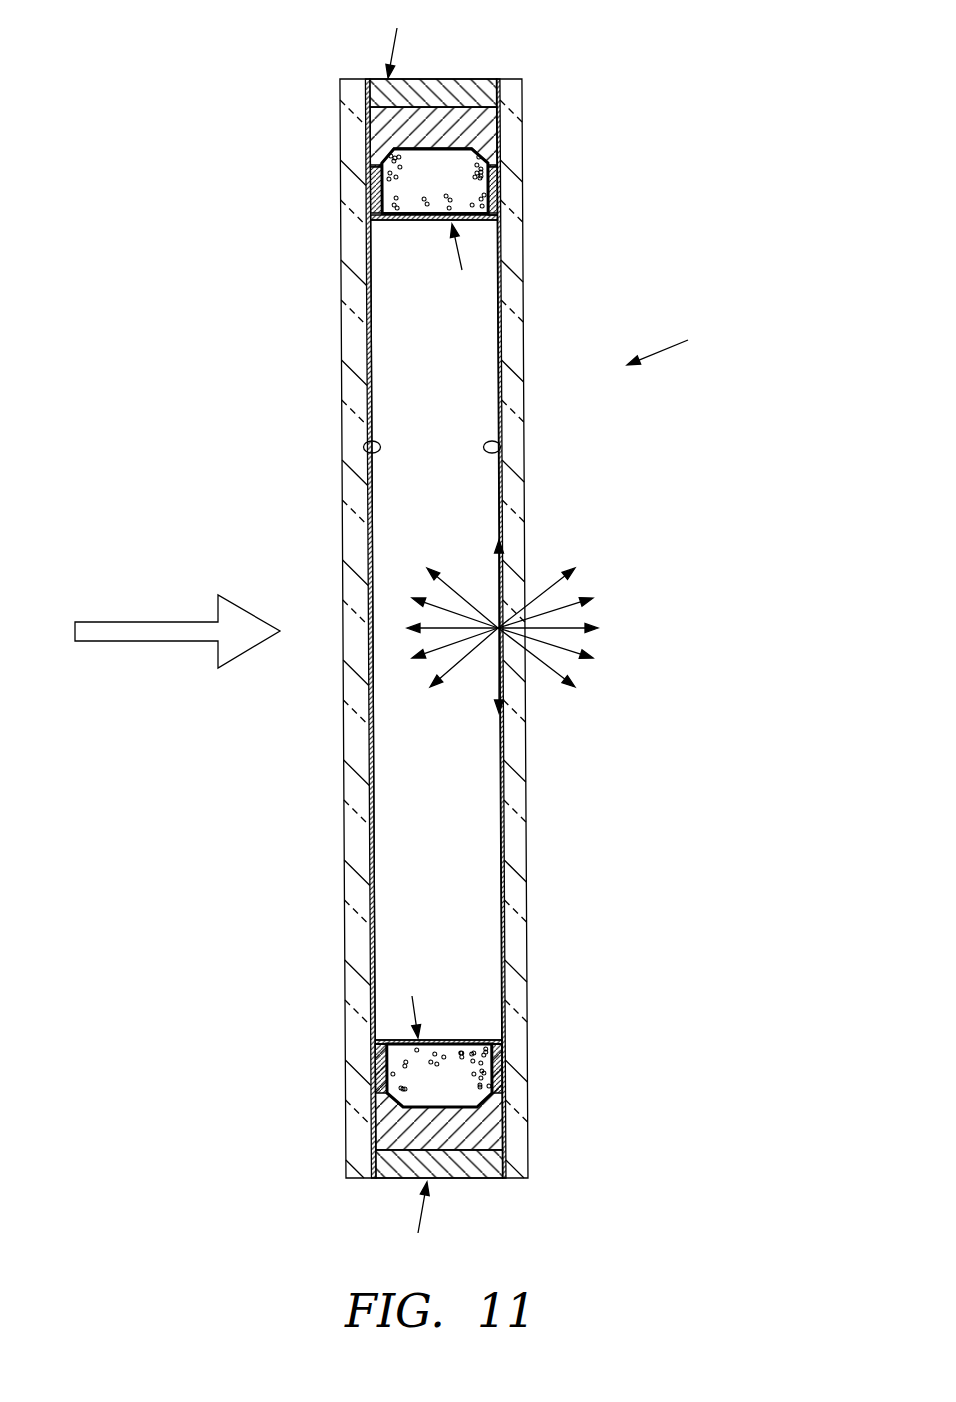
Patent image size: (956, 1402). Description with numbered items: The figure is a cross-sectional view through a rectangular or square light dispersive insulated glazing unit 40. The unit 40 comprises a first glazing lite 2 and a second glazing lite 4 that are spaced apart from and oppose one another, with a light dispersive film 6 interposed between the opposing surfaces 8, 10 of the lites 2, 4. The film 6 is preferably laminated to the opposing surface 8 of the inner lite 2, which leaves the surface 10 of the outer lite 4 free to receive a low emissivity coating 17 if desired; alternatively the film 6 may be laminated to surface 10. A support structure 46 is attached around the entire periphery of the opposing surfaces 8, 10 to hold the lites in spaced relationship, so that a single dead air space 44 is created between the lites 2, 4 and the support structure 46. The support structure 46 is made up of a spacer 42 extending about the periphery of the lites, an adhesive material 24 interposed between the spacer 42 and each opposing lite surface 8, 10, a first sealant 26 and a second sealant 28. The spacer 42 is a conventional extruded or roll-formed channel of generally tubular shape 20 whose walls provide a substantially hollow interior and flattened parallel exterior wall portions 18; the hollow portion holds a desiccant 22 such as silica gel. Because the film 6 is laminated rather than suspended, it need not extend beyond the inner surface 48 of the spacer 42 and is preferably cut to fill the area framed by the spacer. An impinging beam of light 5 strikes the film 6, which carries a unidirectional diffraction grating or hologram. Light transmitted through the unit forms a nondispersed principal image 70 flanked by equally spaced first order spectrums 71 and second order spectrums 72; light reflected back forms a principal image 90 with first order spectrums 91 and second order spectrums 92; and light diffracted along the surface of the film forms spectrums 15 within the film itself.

The first glazing lite 2 is at (523, 295).
The second glazing lite 4 is at (340, 293).
The light beam 5 is at (135, 643).
The light dispersive film 6 is at (498, 478).
The opposing surface 8 is at (500, 447).
The opposing surface 10 is at (364, 447).
The spectrums 15 is at (503, 570).
The low emissivity coating 17 is at (371, 378).
The flattened parallel exterior wall portions 18 is at (483, 182).
The tubular shape 20 is at (370, 220).
The desiccant 22 is at (500, 214).
The adhesive material 24 is at (373, 192).
The first sealant 26 is at (484, 133).
The second sealant 28 is at (456, 82).
The light dispersive insulated glazing unit 40 is at (672, 343).
The spacer 42 is at (440, 631).
The dead air space 44 is at (475, 804).
The support structure 46 is at (407, 632).
The inner surface 48 is at (408, 222).
The principal image 70 is at (565, 626).
The first order spectrums 71 is at (578, 643).
The second order spectrums 72 is at (572, 670).
The principal image 90 is at (440, 625).
The first order spectrums 91 is at (440, 641).
The second order spectrums 92 is at (447, 666).